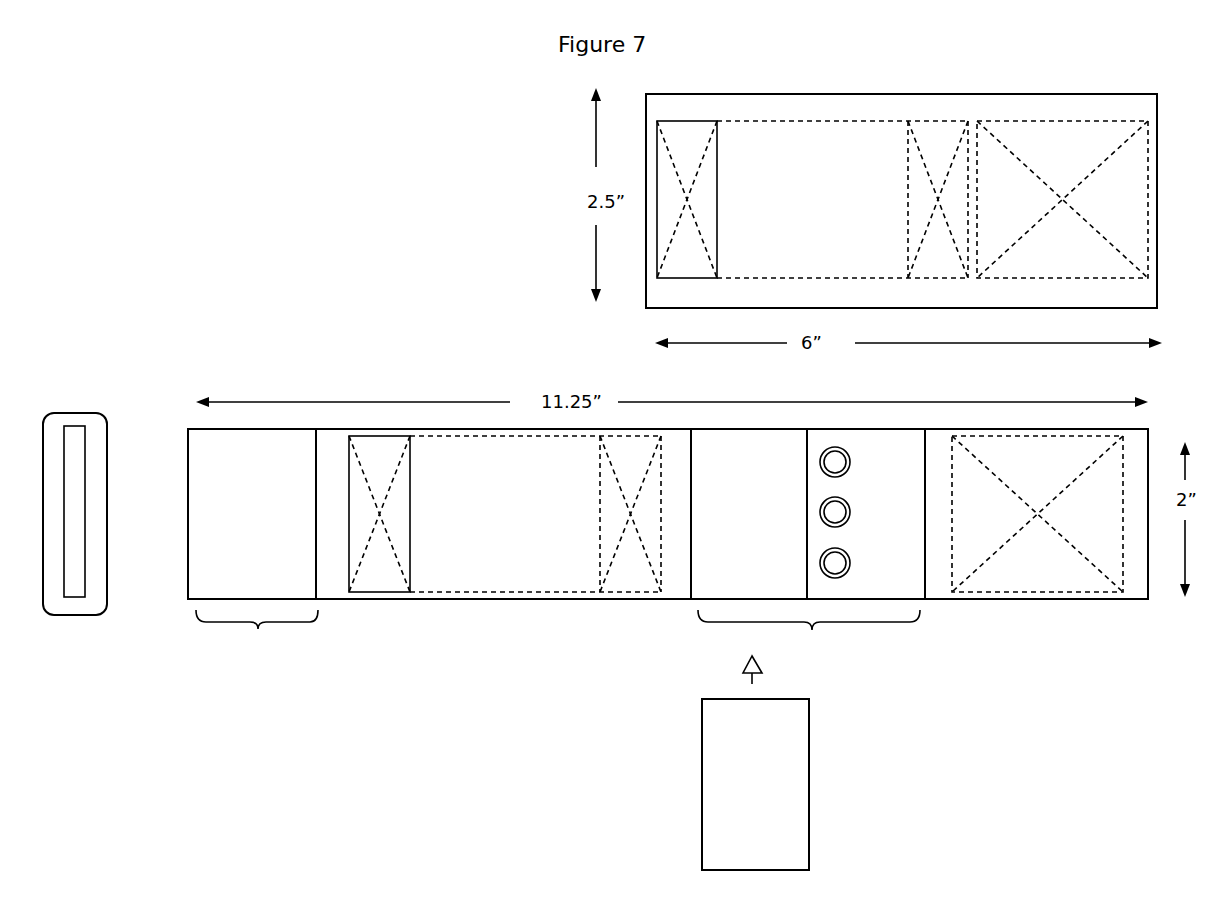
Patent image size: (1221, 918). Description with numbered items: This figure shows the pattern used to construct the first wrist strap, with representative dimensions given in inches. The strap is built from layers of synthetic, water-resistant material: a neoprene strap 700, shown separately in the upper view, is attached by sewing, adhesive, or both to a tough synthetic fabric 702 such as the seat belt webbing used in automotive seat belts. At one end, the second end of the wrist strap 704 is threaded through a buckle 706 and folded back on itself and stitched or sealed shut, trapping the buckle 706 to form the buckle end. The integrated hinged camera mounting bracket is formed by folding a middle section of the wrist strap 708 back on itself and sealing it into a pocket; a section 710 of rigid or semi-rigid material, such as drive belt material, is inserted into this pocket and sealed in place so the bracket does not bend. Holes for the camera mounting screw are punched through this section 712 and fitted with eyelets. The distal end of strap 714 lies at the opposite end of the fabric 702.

The neoprene strap 700 is at (952, 90).
The tough synthetic fabric 702 is at (526, 628).
The second end of the wrist strap 704 is at (265, 637).
The buckle 706 is at (70, 400).
The middle section of the wrist strap 708 is at (813, 648).
The section of rigid or semi-rigid material 710 is at (694, 775).
The section with holes for camera mounting screw 712 is at (857, 525).
The distal end of strap 714 is at (1149, 610).